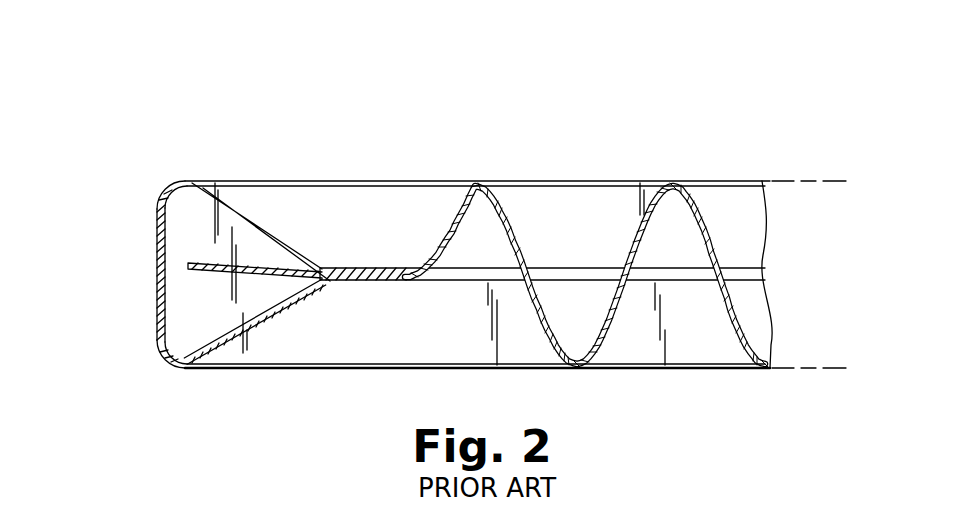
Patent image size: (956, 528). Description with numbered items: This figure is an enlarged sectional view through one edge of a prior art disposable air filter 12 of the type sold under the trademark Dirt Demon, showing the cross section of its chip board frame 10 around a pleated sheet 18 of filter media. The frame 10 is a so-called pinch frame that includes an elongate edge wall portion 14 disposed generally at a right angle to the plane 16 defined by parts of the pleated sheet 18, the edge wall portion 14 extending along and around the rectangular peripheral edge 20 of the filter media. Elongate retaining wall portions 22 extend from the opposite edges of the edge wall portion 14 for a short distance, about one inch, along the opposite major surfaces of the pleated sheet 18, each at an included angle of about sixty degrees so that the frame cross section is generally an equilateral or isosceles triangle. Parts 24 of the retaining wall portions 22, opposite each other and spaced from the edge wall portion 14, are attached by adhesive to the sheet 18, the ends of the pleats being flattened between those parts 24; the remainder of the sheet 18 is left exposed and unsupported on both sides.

The chip board frame 10 is at (148, 324).
The disposable air filter 12 is at (565, 136).
The edge wall portion 14 is at (158, 271).
The plane 16 is at (783, 181).
The pleated sheet of filter media 18 is at (734, 243).
The rectangular peripheral edge 20 is at (188, 262).
The retaining wall portion 22 is at (285, 196).
The part of retaining wall portion 24 is at (375, 266).